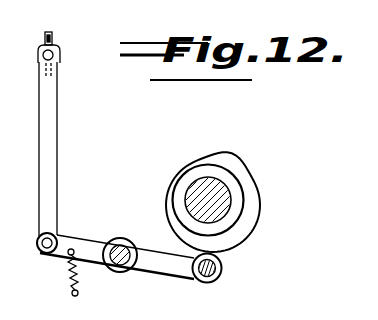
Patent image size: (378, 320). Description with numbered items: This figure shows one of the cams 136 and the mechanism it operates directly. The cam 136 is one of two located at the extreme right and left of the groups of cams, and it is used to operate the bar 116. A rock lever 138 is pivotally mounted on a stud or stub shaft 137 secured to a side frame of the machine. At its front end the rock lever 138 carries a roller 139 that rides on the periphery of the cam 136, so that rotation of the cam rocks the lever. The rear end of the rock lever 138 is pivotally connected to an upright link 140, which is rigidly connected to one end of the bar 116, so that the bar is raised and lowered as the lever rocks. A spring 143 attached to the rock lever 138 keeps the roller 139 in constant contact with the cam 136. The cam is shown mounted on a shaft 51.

The bar 116 is at (52, 41).
The upright link 140 is at (47, 128).
The shaft 51 is at (194, 195).
The cam 136 is at (247, 187).
The rock lever 138 is at (159, 254).
The roller 139 is at (222, 268).
The stub shaft 137 is at (117, 263).
The spring 143 is at (67, 273).